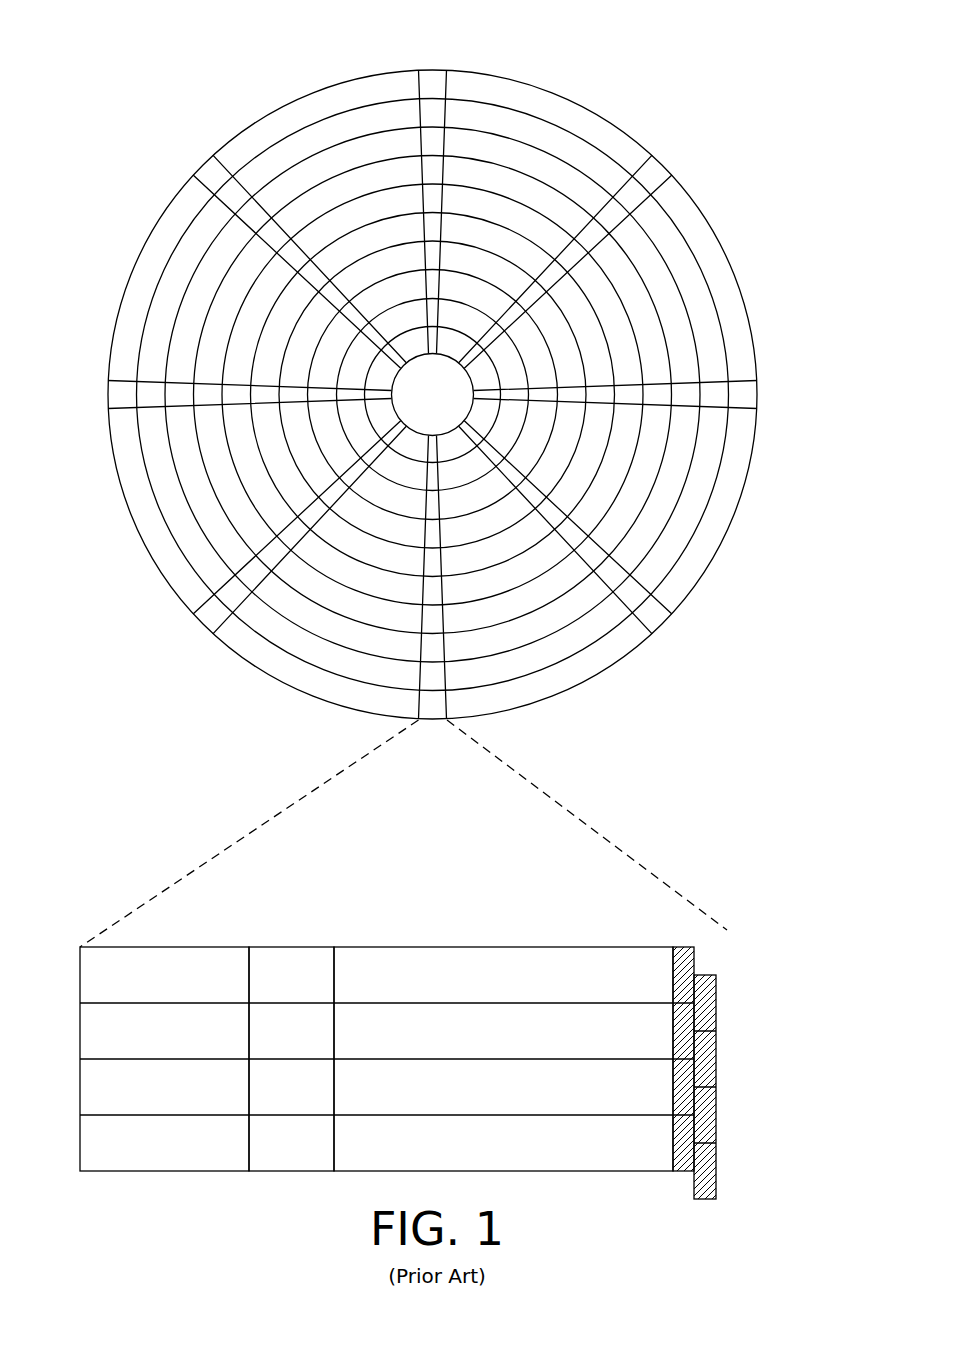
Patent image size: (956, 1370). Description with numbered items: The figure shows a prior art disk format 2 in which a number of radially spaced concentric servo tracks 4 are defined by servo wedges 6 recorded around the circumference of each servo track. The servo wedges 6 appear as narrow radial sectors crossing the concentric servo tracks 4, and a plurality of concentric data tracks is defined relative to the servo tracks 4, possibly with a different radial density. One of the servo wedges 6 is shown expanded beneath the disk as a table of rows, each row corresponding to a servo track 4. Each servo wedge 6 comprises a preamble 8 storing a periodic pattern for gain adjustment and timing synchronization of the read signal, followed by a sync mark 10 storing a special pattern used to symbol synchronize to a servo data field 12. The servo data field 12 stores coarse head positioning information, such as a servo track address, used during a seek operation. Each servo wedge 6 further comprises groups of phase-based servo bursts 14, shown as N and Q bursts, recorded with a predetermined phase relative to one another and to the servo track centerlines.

The disk format 2 is at (433, 406).
The servo tracks 4 is at (548, 118).
The servo wedges 6 is at (433, 406).
The preamble 8 is at (173, 945).
The sync mark 10 is at (295, 945).
The servo data field 12 is at (493, 945).
The servo bursts 14 is at (710, 943).